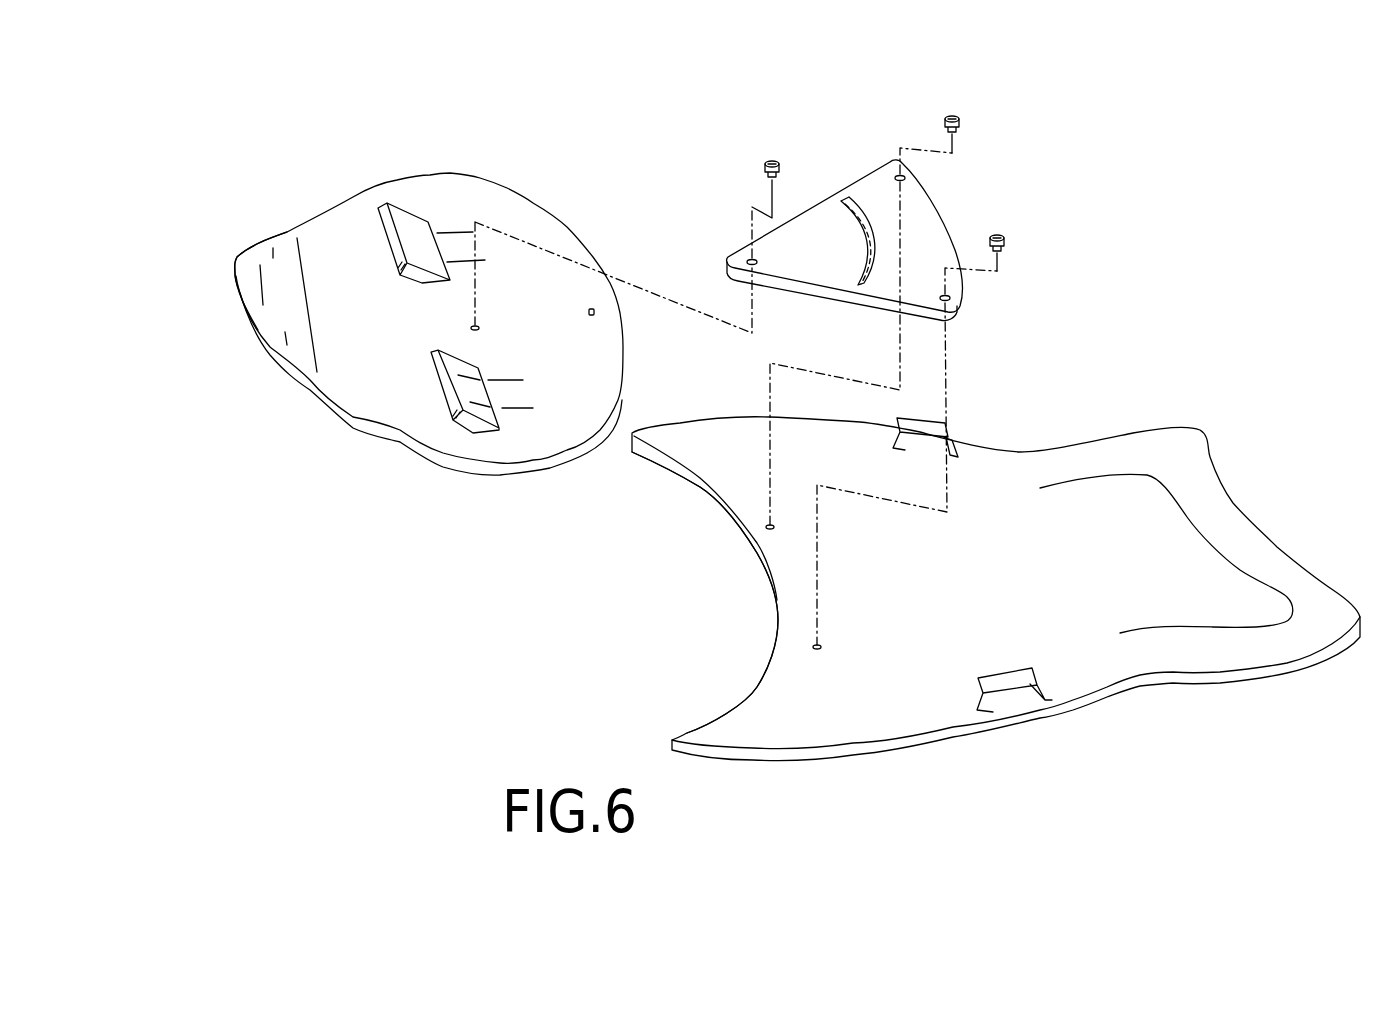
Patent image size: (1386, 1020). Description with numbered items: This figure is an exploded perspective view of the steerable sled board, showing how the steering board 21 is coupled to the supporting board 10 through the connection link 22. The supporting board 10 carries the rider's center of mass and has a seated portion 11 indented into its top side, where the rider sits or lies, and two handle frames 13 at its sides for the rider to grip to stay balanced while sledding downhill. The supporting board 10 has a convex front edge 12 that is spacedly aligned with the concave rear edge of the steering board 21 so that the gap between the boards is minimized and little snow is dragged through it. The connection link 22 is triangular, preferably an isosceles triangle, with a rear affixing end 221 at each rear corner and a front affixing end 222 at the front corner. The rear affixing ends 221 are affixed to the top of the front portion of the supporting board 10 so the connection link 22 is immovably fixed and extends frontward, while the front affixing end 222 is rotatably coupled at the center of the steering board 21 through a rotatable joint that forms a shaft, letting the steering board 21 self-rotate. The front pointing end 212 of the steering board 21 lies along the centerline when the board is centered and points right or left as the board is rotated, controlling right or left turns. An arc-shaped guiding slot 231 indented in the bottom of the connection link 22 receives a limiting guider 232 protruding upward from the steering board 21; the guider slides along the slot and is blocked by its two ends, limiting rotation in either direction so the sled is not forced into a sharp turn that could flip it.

The supporting board 10 is at (1073, 468).
The seated portion 11 is at (1188, 562).
The convex front edge 12 is at (732, 565).
The handle frames 13 is at (932, 430).
The steering board 21 is at (418, 373).
The front pointing end 212 is at (227, 252).
The connection link 22 is at (937, 238).
The rear affixing end 221 is at (907, 160).
The front affixing end 222 is at (743, 255).
The guiding slot 231 is at (868, 217).
The limiting guider 232 is at (594, 311).